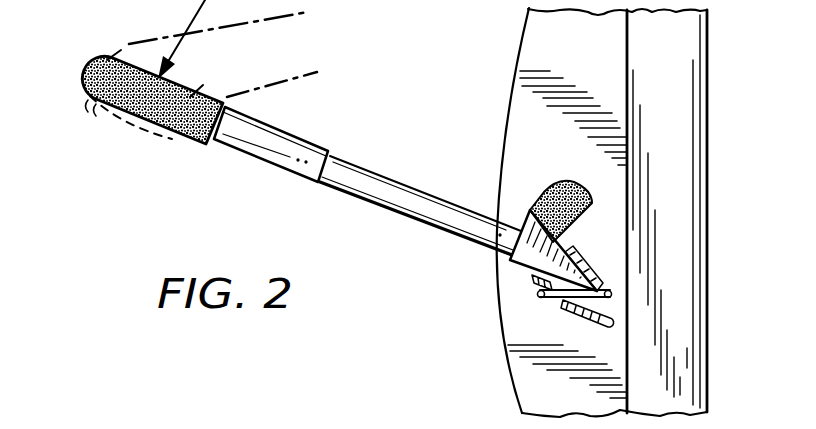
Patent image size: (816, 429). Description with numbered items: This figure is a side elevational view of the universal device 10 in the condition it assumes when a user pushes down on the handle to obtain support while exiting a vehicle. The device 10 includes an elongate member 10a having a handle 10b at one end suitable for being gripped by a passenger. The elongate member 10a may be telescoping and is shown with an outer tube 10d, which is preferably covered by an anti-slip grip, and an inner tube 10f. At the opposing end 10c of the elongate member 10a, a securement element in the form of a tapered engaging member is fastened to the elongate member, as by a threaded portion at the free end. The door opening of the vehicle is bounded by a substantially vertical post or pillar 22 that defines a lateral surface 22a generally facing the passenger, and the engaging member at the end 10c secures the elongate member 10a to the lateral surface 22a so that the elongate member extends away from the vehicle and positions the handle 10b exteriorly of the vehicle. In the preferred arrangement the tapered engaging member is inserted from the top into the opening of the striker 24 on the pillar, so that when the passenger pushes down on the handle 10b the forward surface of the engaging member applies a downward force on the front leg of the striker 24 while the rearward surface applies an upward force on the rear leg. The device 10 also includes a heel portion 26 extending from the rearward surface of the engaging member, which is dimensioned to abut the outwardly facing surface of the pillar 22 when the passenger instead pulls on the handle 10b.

The universal device 10 is at (255, 201).
The elongate member 10a is at (422, 222).
The handle 10b is at (92, 94).
The opposing end 10c is at (531, 196).
The outer tube 10d is at (253, 155).
The inner tube 10f is at (377, 182).
The post or pillar 22 is at (712, 225).
The lateral surface 22a is at (540, 60).
The striker 24 is at (538, 296).
The heel portion 26 is at (577, 180).